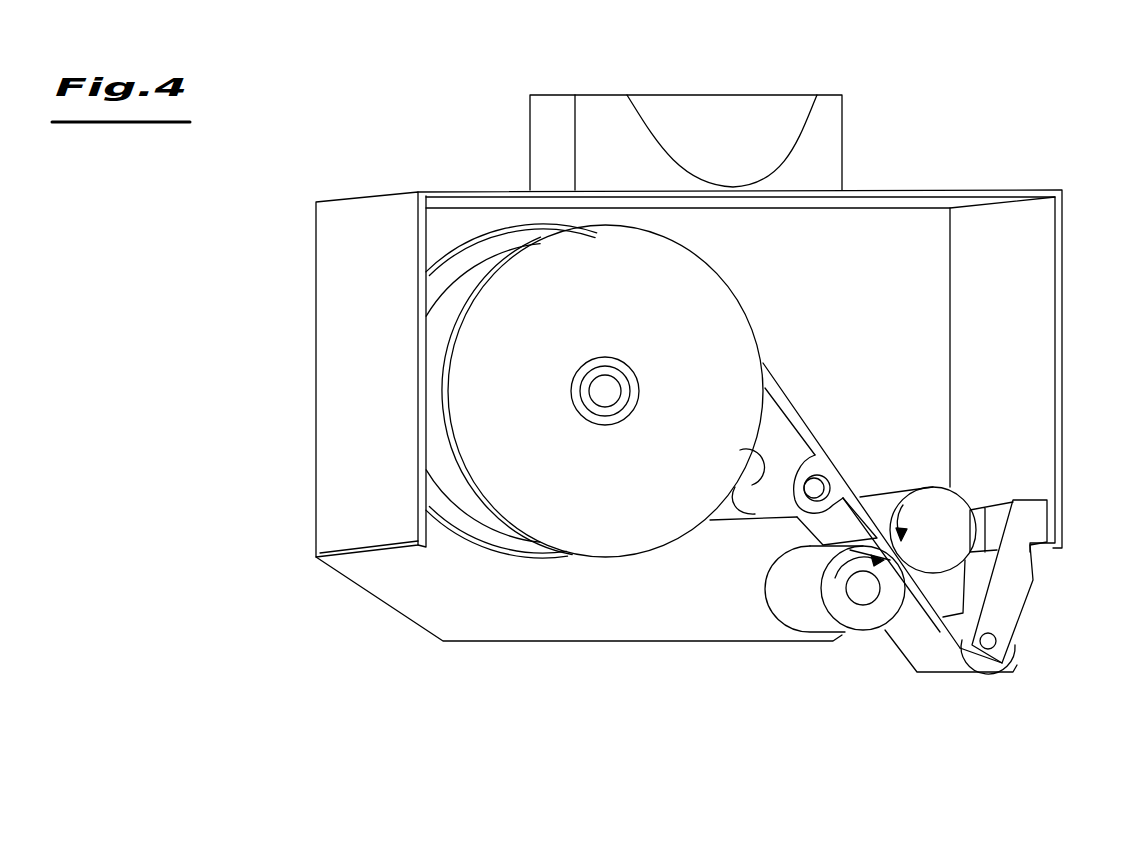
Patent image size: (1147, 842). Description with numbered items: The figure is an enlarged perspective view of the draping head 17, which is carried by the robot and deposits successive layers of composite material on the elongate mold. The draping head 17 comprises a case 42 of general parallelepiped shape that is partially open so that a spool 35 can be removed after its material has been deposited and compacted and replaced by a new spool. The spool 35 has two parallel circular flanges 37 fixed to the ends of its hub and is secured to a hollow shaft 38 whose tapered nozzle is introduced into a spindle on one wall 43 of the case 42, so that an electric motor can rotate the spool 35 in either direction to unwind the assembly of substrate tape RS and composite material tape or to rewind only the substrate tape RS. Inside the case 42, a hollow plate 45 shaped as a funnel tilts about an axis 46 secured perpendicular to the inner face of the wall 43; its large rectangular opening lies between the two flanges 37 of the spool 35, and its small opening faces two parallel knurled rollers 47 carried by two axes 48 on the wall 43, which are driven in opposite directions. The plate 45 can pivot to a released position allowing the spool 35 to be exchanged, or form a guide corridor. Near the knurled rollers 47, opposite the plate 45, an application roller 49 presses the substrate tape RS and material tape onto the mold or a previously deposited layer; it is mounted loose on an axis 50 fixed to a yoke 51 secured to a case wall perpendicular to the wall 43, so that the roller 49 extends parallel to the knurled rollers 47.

The draping head 17 is at (362, 182).
The spool 35 is at (492, 236).
The circular flanges 37 is at (678, 293).
The hollow shaft 38 is at (592, 413).
The case 42 is at (943, 194).
The wall 43 is at (668, 622).
The hollow plate 45 is at (793, 402).
The axis 46 is at (820, 486).
The knurled rollers 47 is at (952, 510).
The axes 48 is at (933, 533).
The application roller 49 is at (1005, 647).
The axis 50 is at (988, 650).
The yoke 51 is at (1019, 598).
The substrate tape RS is at (447, 477).